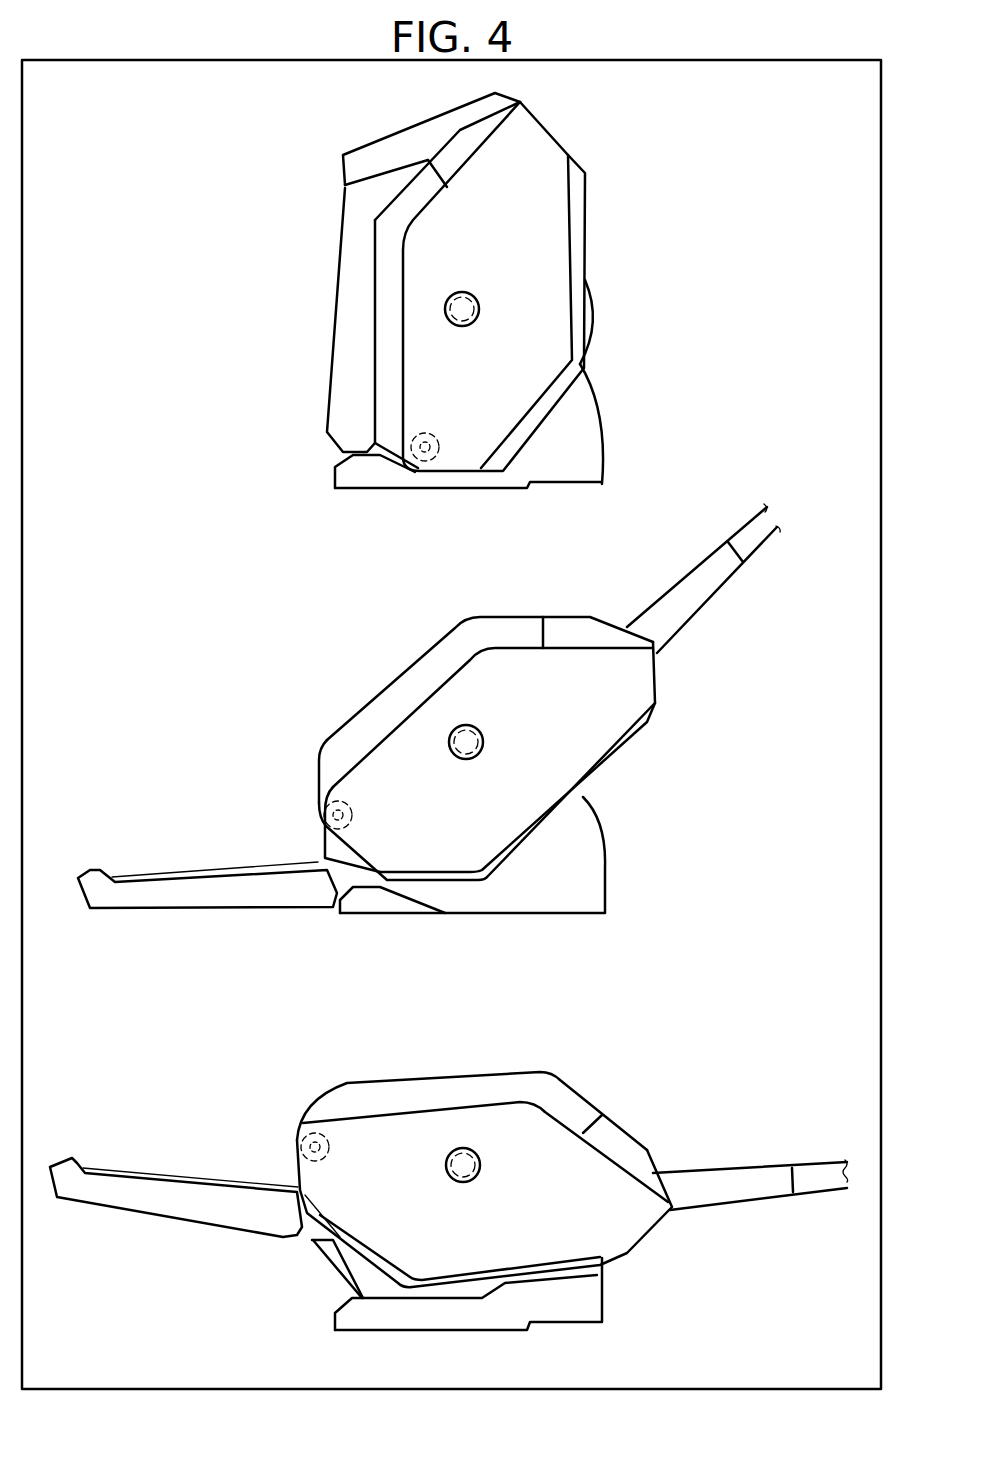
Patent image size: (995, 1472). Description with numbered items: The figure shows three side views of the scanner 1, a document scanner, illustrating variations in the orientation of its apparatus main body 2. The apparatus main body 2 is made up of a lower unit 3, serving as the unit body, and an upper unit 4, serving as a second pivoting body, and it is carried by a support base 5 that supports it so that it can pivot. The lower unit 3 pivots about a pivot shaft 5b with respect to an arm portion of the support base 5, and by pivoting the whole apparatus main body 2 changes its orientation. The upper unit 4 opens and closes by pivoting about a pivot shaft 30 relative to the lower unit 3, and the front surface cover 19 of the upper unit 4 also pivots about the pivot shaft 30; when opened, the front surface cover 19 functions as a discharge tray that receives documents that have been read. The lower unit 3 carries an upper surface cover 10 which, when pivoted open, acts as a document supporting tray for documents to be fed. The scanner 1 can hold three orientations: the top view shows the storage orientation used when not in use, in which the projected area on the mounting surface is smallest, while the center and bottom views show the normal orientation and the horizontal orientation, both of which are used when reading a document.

The scanner 1 is at (219, 126).
The apparatus main body 2 is at (647, 167).
The lower unit 3 is at (563, 223).
The upper unit 4 is at (423, 200).
The support base 5 is at (467, 486).
The pivot shaft 5b is at (480, 307).
The upper surface cover 10 is at (407, 126).
The front surface cover 19 is at (333, 316).
The pivot shaft 30 is at (410, 473).